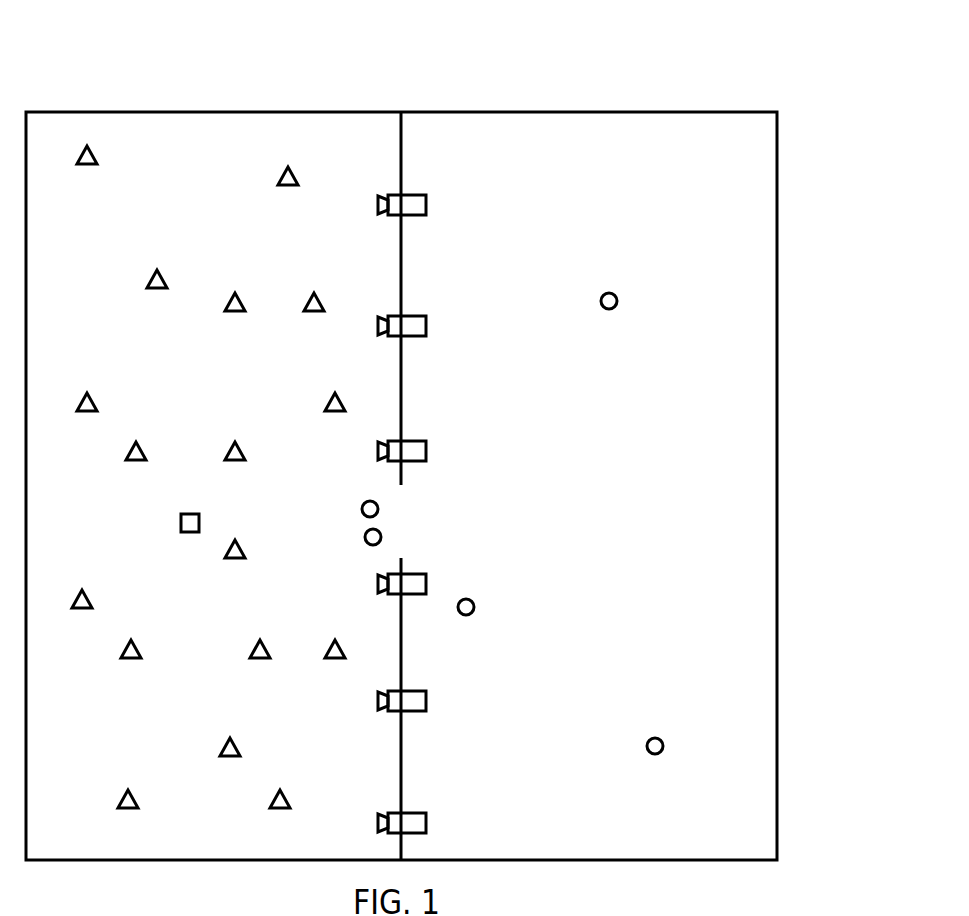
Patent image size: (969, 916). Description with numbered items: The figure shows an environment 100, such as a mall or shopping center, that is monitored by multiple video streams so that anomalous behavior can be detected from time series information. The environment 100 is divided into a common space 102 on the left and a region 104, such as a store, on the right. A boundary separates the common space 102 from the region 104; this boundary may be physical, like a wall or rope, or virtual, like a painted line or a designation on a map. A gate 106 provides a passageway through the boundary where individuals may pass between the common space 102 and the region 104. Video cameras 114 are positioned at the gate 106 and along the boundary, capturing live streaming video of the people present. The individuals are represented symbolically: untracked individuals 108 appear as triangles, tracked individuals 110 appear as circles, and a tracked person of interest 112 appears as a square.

The environment 100 is at (462, 431).
The common space 102 is at (213, 431).
The region 104 is at (569, 431).
The gate 106 is at (465, 486).
The untracked individuals 108 is at (280, 182).
The tracked individuals 110 is at (599, 302).
The tracked person of interest 112 is at (180, 527).
The video cameras 114 is at (430, 442).